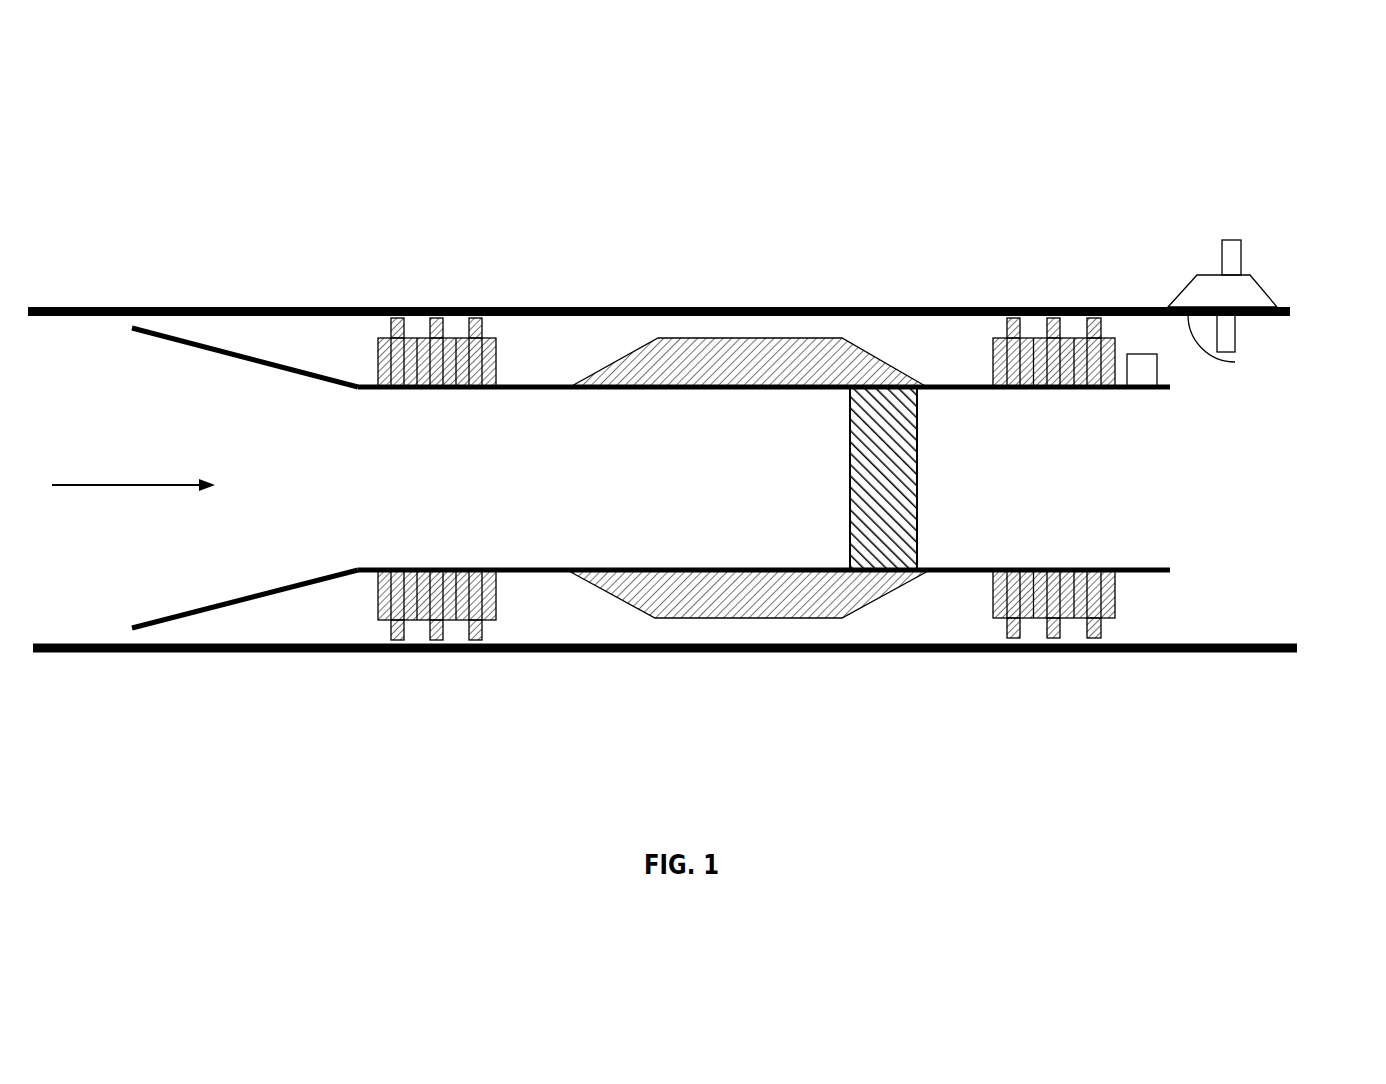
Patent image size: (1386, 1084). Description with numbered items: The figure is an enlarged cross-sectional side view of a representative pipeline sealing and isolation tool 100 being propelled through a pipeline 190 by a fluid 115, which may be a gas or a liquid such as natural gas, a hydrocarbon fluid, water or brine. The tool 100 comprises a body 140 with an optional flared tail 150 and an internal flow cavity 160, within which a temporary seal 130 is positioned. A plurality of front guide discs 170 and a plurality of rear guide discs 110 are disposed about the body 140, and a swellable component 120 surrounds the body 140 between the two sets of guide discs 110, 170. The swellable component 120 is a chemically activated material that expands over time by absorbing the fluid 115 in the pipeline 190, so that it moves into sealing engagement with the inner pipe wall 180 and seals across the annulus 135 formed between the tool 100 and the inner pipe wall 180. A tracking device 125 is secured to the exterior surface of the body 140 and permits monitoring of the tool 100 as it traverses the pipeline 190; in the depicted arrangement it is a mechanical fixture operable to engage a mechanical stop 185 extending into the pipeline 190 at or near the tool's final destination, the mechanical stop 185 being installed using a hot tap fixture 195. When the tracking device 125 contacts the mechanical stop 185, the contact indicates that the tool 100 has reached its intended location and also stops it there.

The pipeline sealing and isolation tool 100 is at (810, 281).
The rear guide discs 110 is at (388, 310).
The fluid 115 is at (125, 487).
The swellable component 120 is at (678, 355).
The tracking device 125 is at (1148, 355).
The temporary seal 130 is at (883, 545).
The annulus 135 is at (717, 323).
The body 140 is at (537, 574).
The flared tail 150 is at (268, 598).
The internal flow cavity 160 is at (528, 497).
The front guide discs 170 is at (1060, 355).
The inner pipe wall 180 is at (1235, 362).
The mechanical stop 185 is at (1223, 335).
The pipeline 190 is at (445, 310).
The hot tap fixture 195 is at (1233, 297).